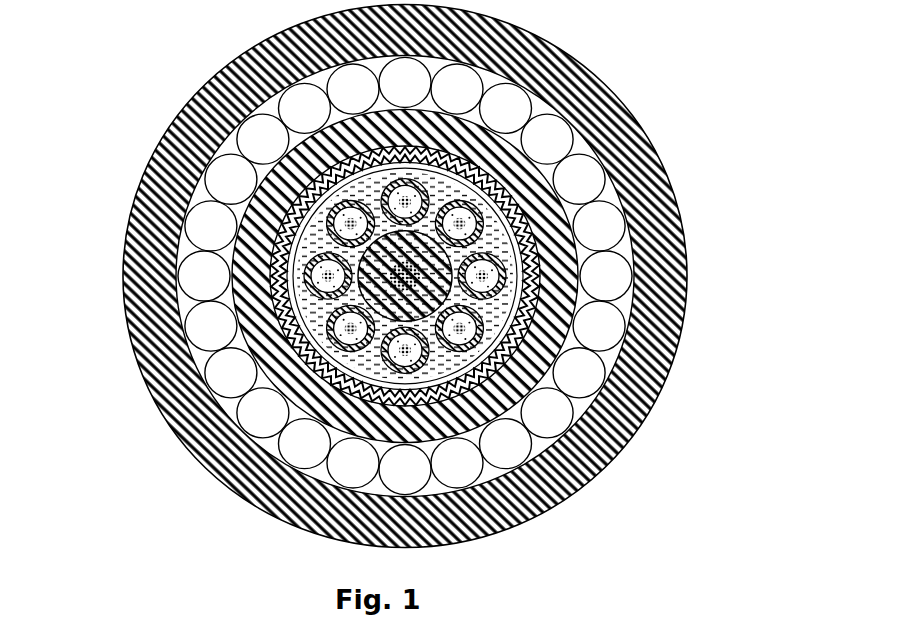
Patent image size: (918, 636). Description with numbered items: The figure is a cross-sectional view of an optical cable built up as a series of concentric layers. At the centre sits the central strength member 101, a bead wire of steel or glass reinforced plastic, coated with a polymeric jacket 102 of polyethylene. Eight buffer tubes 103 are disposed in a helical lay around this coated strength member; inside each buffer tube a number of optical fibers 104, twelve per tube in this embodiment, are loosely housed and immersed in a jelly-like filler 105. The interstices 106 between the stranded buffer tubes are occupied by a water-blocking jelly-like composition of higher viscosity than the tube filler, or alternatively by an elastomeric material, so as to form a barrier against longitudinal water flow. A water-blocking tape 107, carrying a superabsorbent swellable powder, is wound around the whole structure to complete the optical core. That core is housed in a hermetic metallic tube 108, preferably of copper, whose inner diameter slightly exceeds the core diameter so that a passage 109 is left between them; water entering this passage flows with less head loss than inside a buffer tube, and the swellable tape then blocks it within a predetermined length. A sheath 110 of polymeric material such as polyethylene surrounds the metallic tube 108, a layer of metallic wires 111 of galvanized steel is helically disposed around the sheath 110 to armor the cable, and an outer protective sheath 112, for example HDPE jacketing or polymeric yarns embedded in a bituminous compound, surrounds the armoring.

The central strength member 101 is at (327, 268).
The polymeric jacket 102 is at (400, 274).
The buffer tubes 103 is at (310, 405).
The optical fibers 104 is at (300, 385).
The jelly-like filler 105 is at (300, 352).
The interstices 106 is at (360, 188).
The water-blocking tape 107 is at (497, 183).
The hermetic metallic tube 108 is at (612, 278).
The passage 109 is at (540, 190).
The sheath 110 is at (590, 296).
The metallic wires 111 is at (570, 425).
The outer protective sheath 112 is at (660, 350).